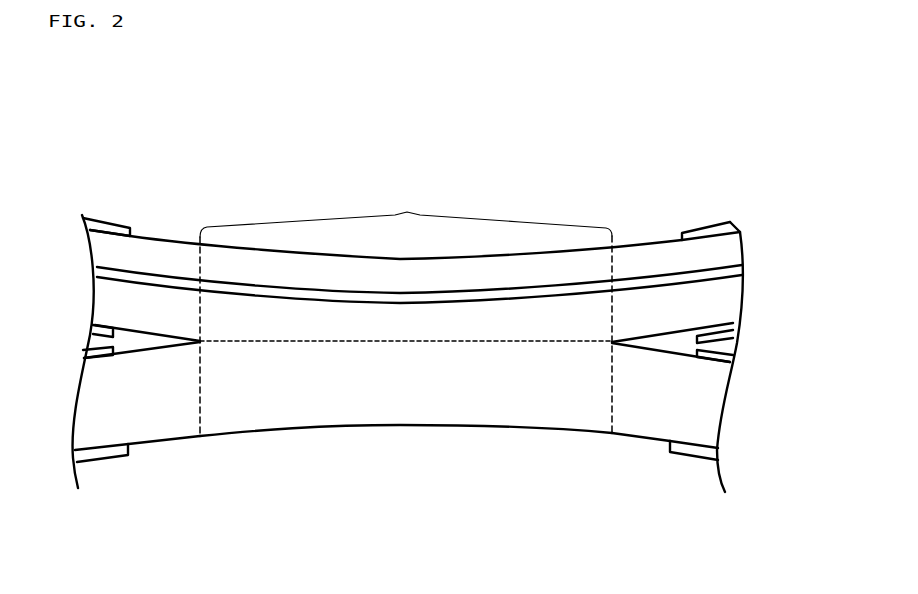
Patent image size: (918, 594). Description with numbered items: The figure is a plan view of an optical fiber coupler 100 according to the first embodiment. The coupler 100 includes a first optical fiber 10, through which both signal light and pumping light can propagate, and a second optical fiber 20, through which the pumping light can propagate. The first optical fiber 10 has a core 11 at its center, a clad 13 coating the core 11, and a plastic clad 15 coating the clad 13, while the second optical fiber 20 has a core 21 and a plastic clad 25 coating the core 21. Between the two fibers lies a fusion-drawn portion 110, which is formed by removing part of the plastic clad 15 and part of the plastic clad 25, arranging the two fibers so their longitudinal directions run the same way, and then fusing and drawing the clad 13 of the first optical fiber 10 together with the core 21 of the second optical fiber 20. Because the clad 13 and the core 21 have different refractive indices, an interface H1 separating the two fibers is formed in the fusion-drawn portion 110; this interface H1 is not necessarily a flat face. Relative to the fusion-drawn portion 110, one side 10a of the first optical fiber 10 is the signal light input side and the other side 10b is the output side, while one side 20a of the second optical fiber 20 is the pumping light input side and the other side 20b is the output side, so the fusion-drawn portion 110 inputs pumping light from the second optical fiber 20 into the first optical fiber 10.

The optical fiber coupler 100 is at (495, 196).
The fusion-drawn portion 110 is at (406, 313).
The first optical fiber 10 is at (173, 231).
The one side of the first optical fiber 10a is at (177, 271).
The other side of the first optical fiber 10b is at (646, 274).
The core 11 is at (697, 276).
The clad 13 is at (658, 267).
The plastic clad 15 is at (120, 228).
The second optical fiber 20 is at (148, 451).
The one side of the second optical fiber 20a is at (190, 389).
The other side of the second optical fiber 20b is at (638, 404).
The core 21 is at (662, 450).
The plastic clad 25 is at (95, 358).
The interface H1 is at (310, 343).